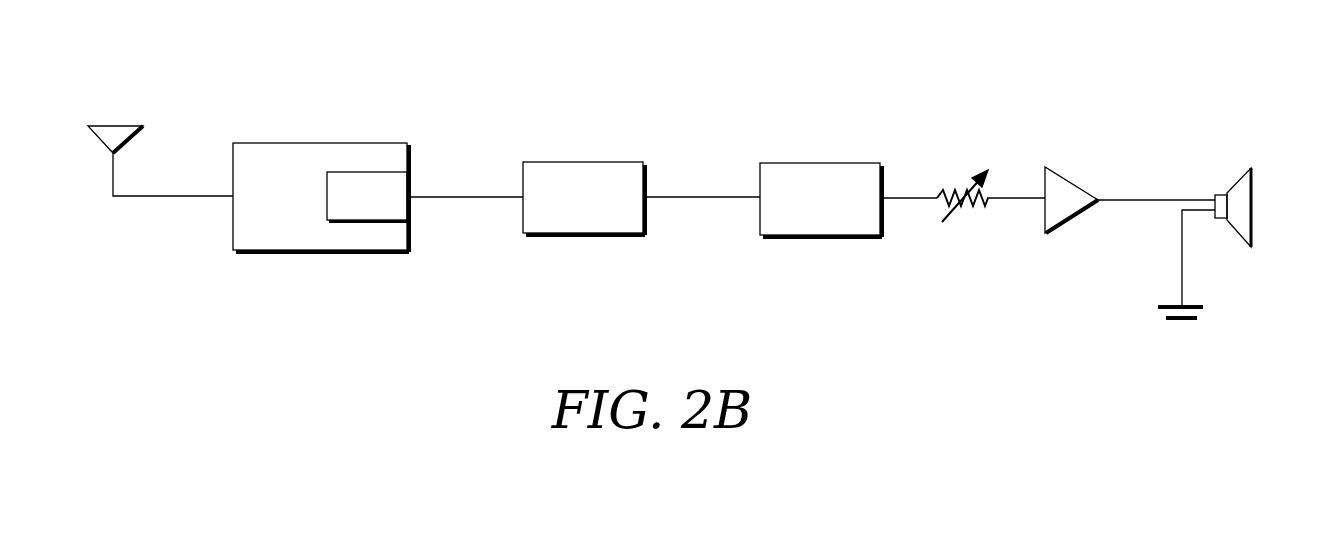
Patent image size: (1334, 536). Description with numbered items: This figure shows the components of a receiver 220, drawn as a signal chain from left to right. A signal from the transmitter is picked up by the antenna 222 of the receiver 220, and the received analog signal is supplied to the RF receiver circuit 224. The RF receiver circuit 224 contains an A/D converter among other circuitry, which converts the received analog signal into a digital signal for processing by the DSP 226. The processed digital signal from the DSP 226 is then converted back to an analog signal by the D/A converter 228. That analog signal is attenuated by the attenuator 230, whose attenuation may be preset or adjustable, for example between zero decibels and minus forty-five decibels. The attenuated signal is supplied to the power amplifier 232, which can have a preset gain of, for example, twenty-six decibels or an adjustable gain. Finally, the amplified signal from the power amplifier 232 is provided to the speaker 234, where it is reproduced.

The receiver 220 is at (1330, 98).
The antenna 222 is at (106, 125).
The RF receiver circuit 224 is at (250, 142).
The DSP 226 is at (542, 162).
The D/A converter 228 is at (778, 163).
The attenuator 230 is at (955, 192).
The power amplifier 232 is at (1073, 182).
The speaker 234 is at (1237, 192).